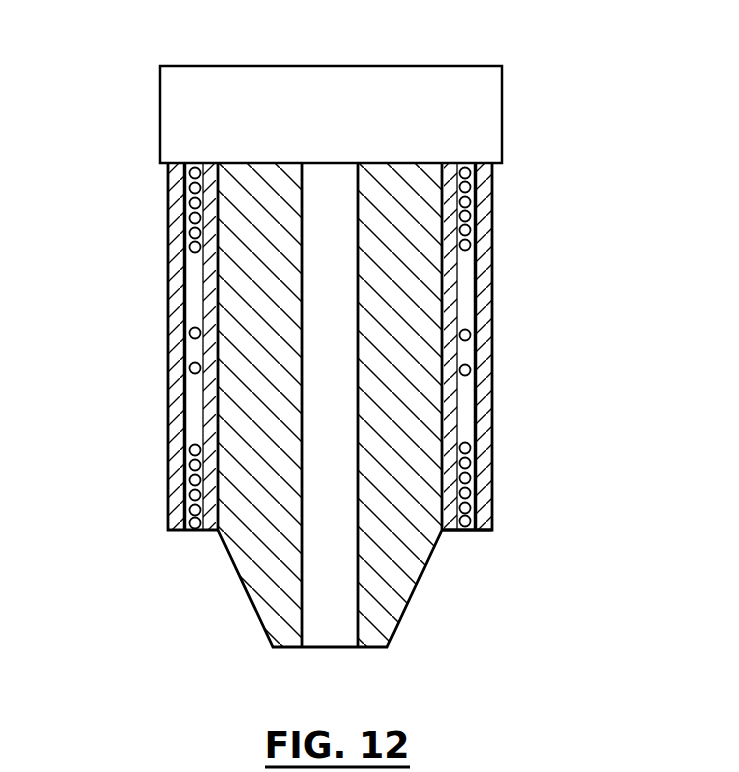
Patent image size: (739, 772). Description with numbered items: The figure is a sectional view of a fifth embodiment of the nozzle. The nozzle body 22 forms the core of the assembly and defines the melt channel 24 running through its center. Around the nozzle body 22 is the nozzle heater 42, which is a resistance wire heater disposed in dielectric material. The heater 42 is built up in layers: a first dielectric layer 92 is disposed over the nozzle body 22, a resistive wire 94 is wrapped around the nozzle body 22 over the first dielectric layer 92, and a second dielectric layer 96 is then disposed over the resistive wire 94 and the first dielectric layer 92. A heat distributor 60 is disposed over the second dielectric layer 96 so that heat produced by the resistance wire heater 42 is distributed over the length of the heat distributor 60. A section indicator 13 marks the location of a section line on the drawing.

The nozzle body 22 is at (398, 512).
The melt channel 24 is at (334, 190).
The heat distributor 60 is at (175, 490).
The second dielectric layer 96 is at (188, 428).
The nozzle heater 42 is at (215, 538).
The resistive wire 94 is at (175, 345).
The section line 13 is at (155, 315).
The first dielectric layer 92 is at (447, 533).